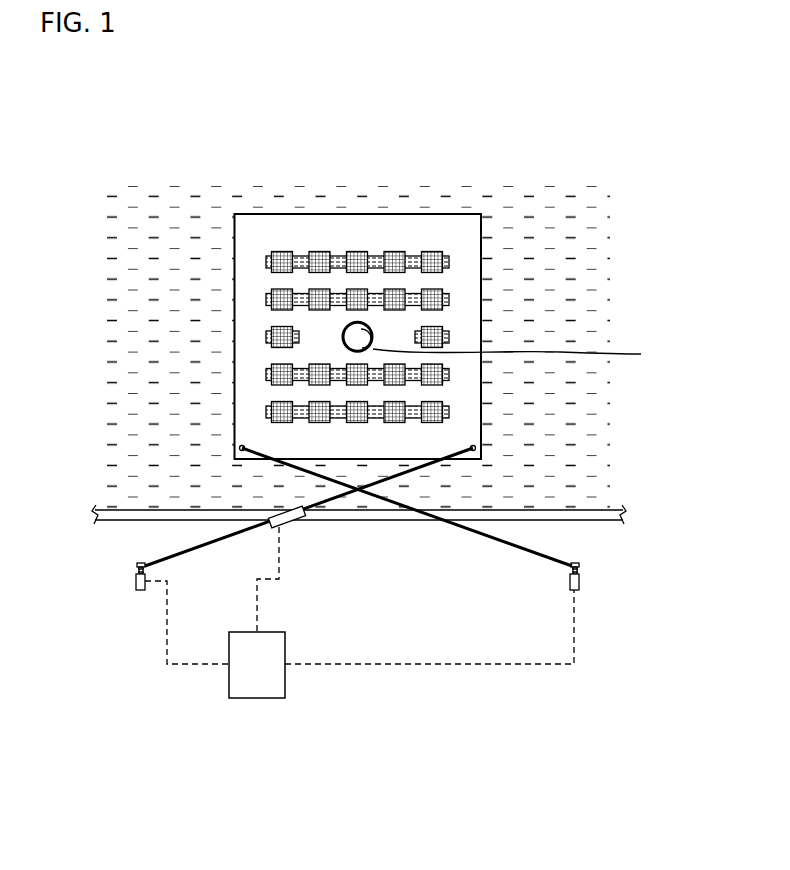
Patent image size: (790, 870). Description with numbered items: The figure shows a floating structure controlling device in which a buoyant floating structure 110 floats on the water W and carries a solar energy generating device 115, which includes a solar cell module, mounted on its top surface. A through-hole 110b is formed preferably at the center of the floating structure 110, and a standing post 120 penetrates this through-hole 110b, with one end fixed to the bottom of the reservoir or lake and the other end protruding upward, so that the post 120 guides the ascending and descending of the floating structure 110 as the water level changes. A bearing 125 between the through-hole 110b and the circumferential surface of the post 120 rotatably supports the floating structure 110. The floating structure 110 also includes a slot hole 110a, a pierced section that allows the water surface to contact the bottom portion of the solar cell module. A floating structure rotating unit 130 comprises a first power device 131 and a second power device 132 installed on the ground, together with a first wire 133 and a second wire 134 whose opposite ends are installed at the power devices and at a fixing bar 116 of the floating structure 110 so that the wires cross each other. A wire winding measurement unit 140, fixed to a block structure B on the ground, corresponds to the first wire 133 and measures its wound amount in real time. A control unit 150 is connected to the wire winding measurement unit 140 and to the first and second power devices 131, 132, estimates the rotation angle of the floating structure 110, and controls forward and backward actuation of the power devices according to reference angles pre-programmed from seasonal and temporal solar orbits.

The floating structure 110 is at (269, 220).
The slot hole 110a is at (410, 257).
The through-hole 110b is at (524, 354).
The solar energy generating device 115 is at (318, 251).
The fixing bar 116 is at (242, 448).
The post 120 is at (355, 333).
The bearing 125 is at (342, 347).
The floating structure rotating unit 130 is at (104, 576).
The first power device 131 is at (136, 578).
The second power device 132 is at (579, 578).
The first wire 133 is at (217, 547).
The second wire 134 is at (498, 547).
The wire winding measurement unit 140 is at (295, 530).
The control unit 150 is at (258, 698).
The water W is at (567, 217).
The block structure B is at (597, 520).